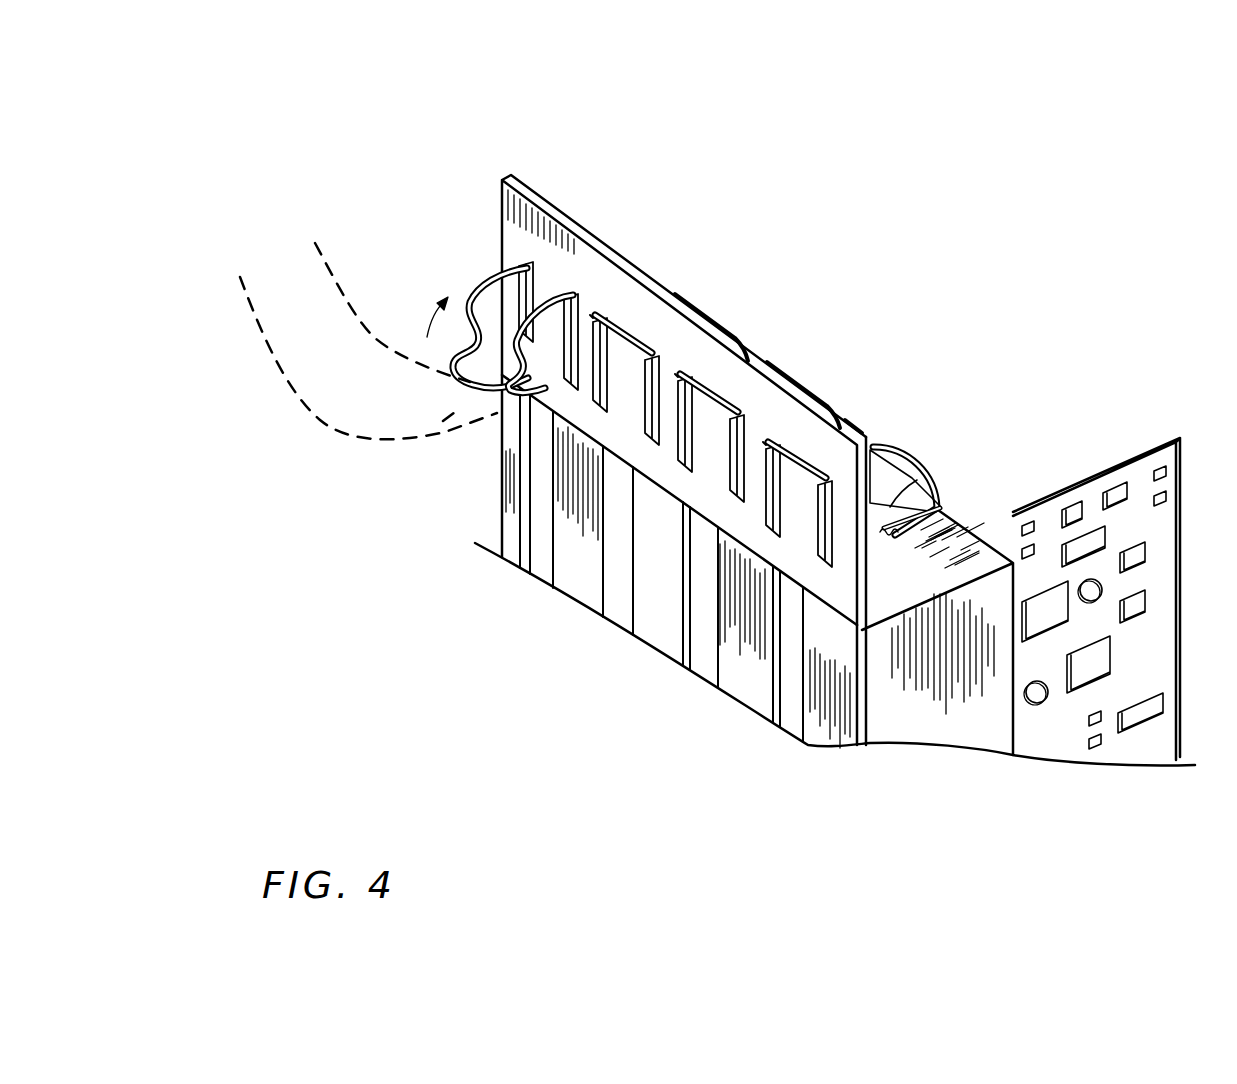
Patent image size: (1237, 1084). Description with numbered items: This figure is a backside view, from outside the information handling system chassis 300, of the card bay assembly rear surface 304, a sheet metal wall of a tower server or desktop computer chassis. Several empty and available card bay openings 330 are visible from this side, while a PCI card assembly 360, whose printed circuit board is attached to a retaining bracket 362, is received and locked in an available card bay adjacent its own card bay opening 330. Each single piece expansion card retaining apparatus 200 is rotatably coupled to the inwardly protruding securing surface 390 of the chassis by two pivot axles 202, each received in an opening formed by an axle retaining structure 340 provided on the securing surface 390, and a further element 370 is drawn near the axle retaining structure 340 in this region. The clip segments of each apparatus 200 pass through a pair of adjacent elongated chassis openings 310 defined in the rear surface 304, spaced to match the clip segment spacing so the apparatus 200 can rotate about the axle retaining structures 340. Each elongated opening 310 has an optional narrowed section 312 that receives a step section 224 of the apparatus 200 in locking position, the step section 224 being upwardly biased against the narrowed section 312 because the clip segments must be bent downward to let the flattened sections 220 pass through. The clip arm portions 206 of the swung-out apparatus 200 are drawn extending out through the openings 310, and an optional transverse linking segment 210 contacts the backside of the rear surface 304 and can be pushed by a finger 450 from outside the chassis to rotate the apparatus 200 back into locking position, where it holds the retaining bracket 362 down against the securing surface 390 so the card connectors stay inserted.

The information handling system chassis 300 is at (461, 153).
The card bay assembly rear surface 304 is at (512, 215).
The elongated chassis opening 310 is at (510, 284).
The narrowed section 312 is at (770, 444).
The card bay opening 330 is at (790, 740).
The hook arm 206 is at (505, 268).
The transverse linking segment 210 is at (460, 384).
The flattened section 220 is at (462, 300).
The step section 224 is at (445, 348).
The finger 450 is at (283, 382).
The expansion card retaining apparatus 200 is at (875, 448).
The retaining bracket 362 is at (918, 480).
The spring 370 is at (941, 511).
The axle retaining structure 340 is at (938, 516).
The pivot axle 202 is at (944, 514).
The PCI card assembly 360 is at (1165, 440).
The inwardly protruding securing surface 390 is at (925, 578).